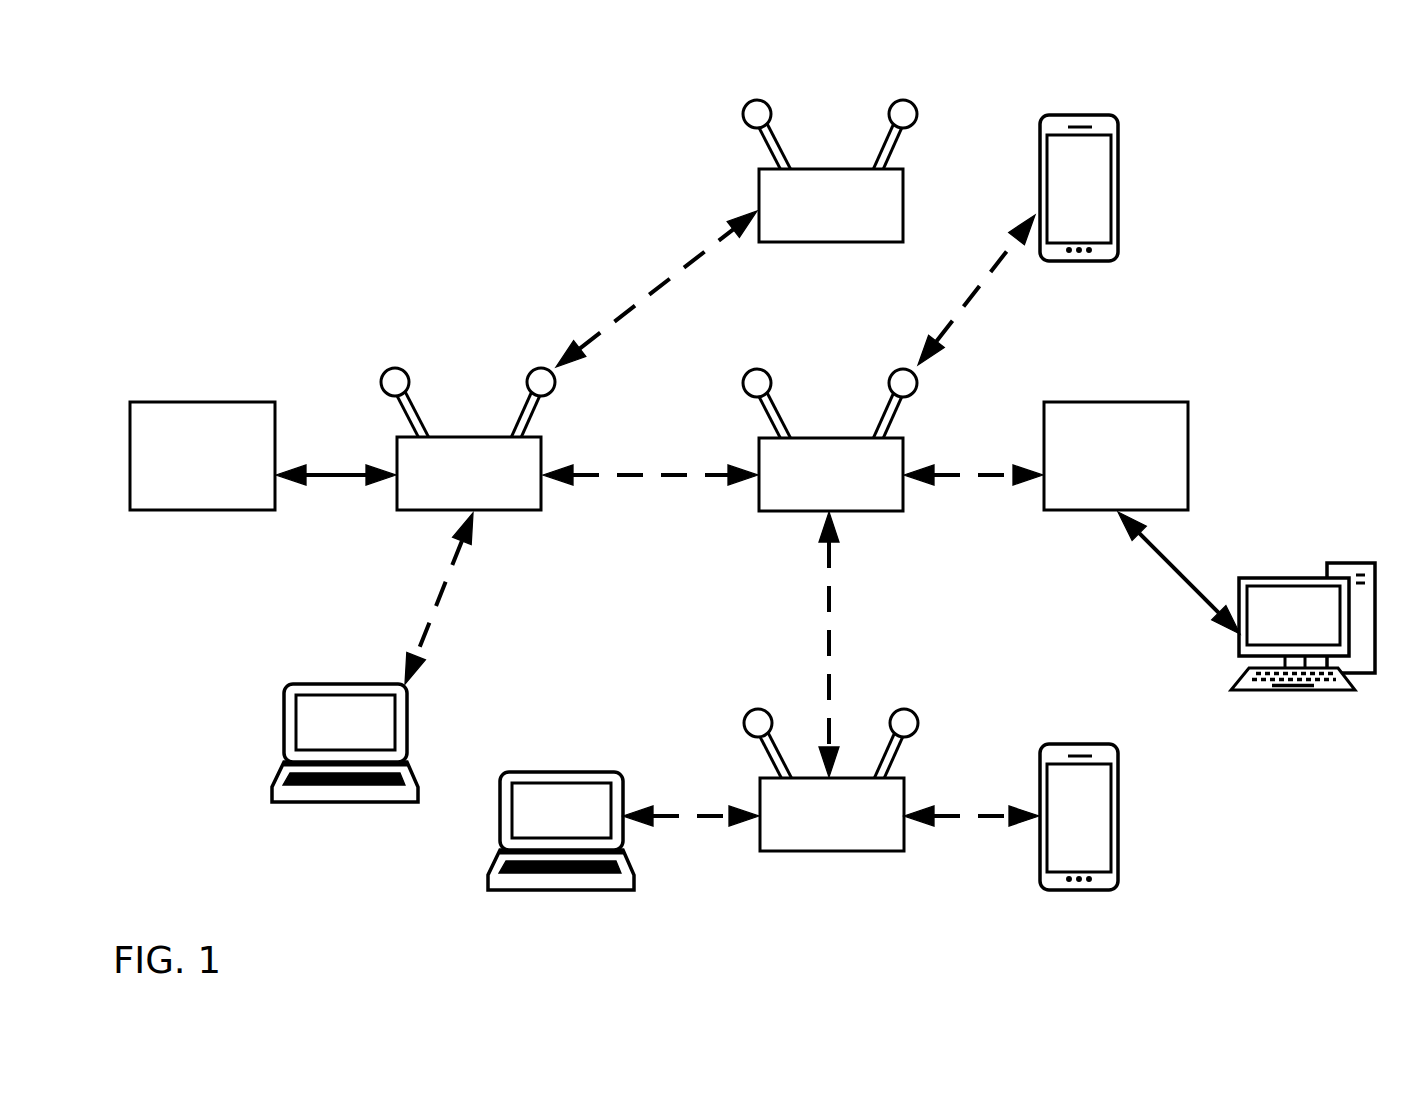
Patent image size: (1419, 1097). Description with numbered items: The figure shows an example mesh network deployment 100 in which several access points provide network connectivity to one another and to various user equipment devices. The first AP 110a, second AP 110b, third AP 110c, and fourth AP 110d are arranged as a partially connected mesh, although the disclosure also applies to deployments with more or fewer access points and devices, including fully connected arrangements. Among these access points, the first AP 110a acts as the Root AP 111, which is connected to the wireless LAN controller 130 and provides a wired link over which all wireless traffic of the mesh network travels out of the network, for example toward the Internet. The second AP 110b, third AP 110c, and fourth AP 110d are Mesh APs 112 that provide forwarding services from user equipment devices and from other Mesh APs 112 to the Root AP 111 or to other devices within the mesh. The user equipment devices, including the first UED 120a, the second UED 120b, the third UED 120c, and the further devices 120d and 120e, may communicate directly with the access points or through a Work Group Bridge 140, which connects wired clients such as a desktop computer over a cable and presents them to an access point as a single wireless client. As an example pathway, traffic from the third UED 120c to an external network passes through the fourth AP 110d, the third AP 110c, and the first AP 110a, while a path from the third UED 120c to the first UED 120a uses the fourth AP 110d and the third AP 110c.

The mesh network deployment 100 is at (1348, 135).
The first AP 110a is at (468, 439).
The second AP 110b is at (830, 171).
The third AP 110c is at (830, 440).
The fourth AP 110d is at (831, 780).
The Root AP 111 is at (468, 424).
The Mesh AP 112 is at (830, 514).
The first UED 120a is at (345, 683).
The second UED 120b is at (1118, 187).
The third UED 120c is at (1302, 578).
The user equipment device 120d is at (1118, 815).
The user equipment device 120e is at (560, 772).
The wireless LAN controller 130 is at (184, 469).
The Work Group Bridge 140 is at (1098, 469).